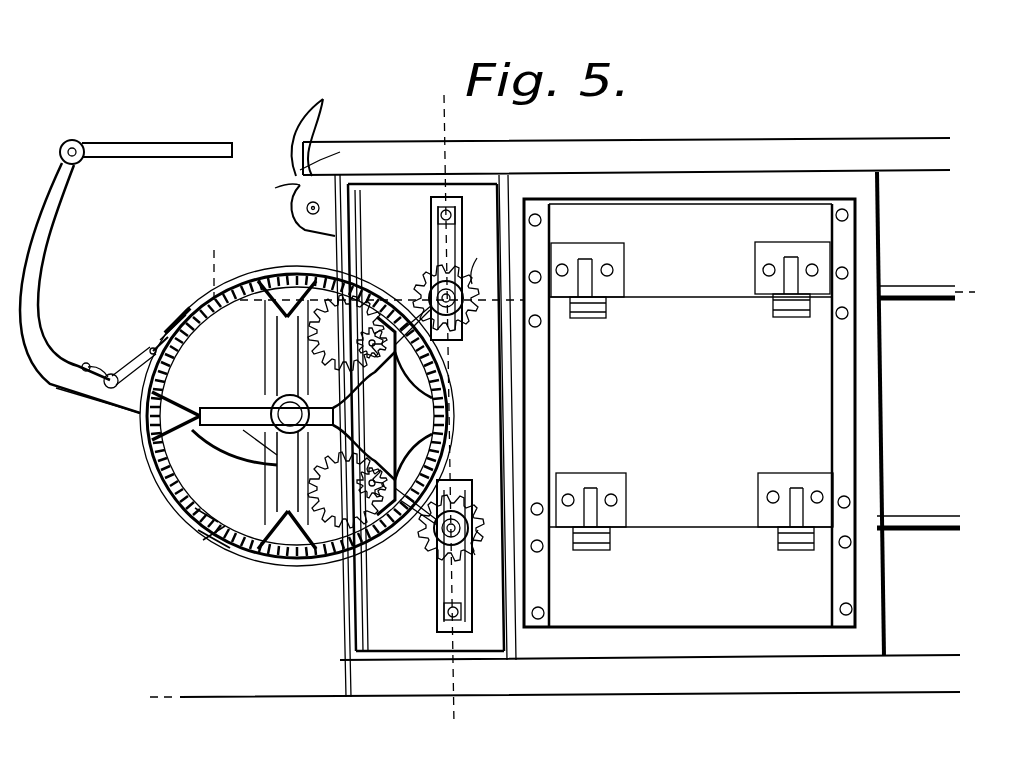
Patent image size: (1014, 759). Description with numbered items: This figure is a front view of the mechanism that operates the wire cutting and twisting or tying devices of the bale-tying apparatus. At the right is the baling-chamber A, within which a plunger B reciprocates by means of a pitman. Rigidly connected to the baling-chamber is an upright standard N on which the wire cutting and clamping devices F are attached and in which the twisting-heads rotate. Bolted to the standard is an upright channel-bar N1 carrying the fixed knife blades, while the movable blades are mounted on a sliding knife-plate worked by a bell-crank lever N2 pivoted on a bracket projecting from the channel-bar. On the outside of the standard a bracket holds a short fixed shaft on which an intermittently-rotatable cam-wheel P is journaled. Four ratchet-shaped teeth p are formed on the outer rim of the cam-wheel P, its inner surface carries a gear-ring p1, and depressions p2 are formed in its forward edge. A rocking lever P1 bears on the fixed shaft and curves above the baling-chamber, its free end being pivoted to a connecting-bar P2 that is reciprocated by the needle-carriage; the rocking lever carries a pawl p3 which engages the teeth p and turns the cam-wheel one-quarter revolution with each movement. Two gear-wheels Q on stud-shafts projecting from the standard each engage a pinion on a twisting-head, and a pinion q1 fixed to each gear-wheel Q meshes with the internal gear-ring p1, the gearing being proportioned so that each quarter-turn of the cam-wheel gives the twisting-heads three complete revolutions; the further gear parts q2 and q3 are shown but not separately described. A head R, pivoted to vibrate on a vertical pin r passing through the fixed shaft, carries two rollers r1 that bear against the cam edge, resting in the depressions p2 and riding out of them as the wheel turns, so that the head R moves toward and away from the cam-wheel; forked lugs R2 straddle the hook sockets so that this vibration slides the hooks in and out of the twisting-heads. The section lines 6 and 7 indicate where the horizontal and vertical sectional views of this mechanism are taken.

The baling-chamber A is at (710, 630).
The plunger B is at (689, 413).
The wire cutting and clamping devices F is at (918, 526).
The upright standard N is at (382, 622).
The upright channel-bar N1 is at (445, 585).
The bell-crank lever N2 is at (285, 190).
The cam-wheel P is at (138, 460).
The rocking lever P1 is at (52, 228).
The connecting-bar P2 is at (170, 162).
The ratchet-shaped teeth p is at (198, 538).
The gear-ring p1 is at (283, 473).
The depressions p2 is at (192, 512).
The pawl p3 is at (98, 409).
The gear-wheels Q is at (323, 497).
The pinion q1 is at (372, 360).
The ratchet q2 is at (372, 468).
The pawl q3 is at (476, 412).
The vertical pin r is at (283, 392).
The rollers r1 is at (425, 540).
The head R is at (435, 382).
The forked lug R2 is at (444, 414).
The section line 6- 6 is at (598, 266).
The section line 7- 7 is at (446, 411).